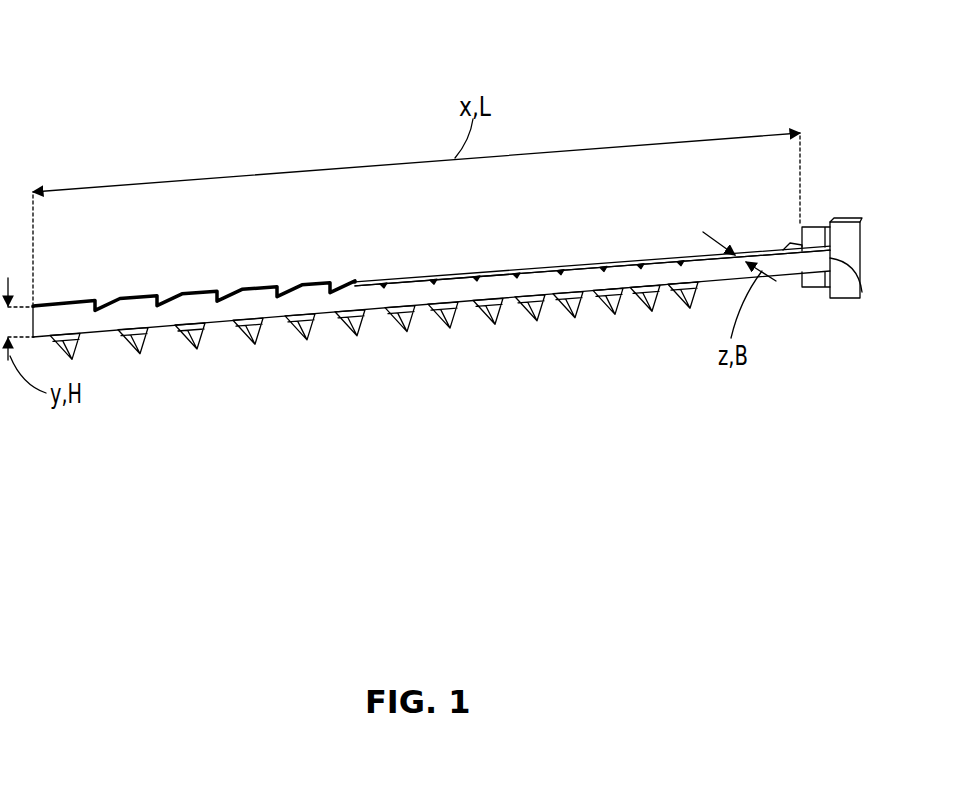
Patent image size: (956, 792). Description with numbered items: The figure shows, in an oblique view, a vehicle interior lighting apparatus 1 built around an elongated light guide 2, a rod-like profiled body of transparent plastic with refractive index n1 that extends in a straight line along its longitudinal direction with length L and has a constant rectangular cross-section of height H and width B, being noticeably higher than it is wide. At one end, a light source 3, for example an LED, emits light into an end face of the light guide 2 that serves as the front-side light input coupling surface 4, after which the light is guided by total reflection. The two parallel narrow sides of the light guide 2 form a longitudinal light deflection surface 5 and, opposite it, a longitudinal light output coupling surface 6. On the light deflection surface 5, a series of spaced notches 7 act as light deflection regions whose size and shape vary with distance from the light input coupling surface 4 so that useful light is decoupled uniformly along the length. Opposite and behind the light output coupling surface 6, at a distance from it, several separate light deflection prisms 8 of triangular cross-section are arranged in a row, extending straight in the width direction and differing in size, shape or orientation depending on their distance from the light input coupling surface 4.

The vehicle interior lighting apparatus 1 is at (125, 68).
The light guide 2 is at (785, 276).
The light source 3 is at (845, 220).
The light input coupling surface 4 is at (862, 292).
The light deflection surface 5 is at (620, 264).
The light output coupling surface 6 is at (727, 280).
The notches 7 is at (160, 298).
The light deflection prisms 8 is at (192, 355).